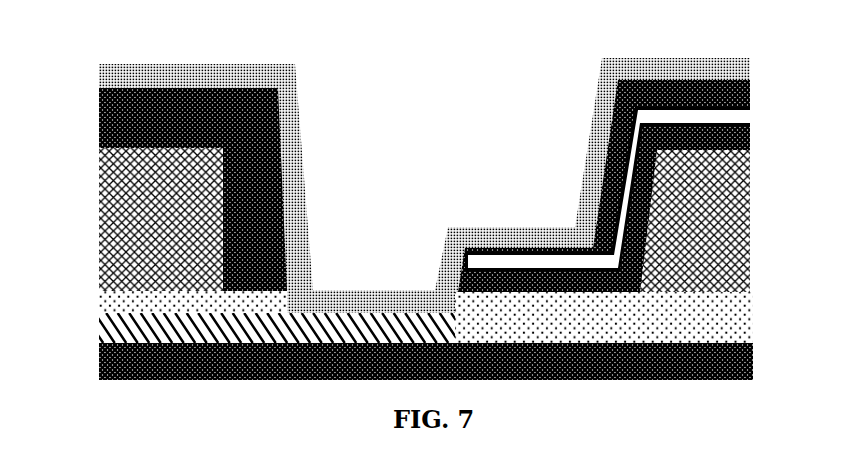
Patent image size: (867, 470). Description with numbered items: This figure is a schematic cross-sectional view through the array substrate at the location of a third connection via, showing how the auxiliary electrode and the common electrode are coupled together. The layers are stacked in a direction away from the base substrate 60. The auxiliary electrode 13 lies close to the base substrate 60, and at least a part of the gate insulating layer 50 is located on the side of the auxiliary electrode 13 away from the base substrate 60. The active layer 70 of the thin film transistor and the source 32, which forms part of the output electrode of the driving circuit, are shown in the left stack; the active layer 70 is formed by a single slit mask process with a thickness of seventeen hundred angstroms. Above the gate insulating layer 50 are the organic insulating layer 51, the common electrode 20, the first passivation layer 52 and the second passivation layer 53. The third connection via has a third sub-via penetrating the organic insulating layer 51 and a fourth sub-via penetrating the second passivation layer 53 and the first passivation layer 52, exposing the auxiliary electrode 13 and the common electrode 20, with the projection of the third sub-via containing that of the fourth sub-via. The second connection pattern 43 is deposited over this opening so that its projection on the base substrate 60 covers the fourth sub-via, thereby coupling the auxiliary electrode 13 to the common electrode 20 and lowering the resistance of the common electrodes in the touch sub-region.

The auxiliary electrode 13 is at (102, 326).
The common electrode 20 is at (750, 113).
The source 32 is at (155, 189).
The second connection pattern 43 is at (722, 57).
The gate insulating layer 50 is at (735, 315).
The organic insulating layer 51 is at (740, 243).
The first passivation layer 52 is at (750, 140).
The second passivation layer 53 is at (750, 88).
The base substrate 60 is at (752, 368).
The active layer 70 is at (104, 261).